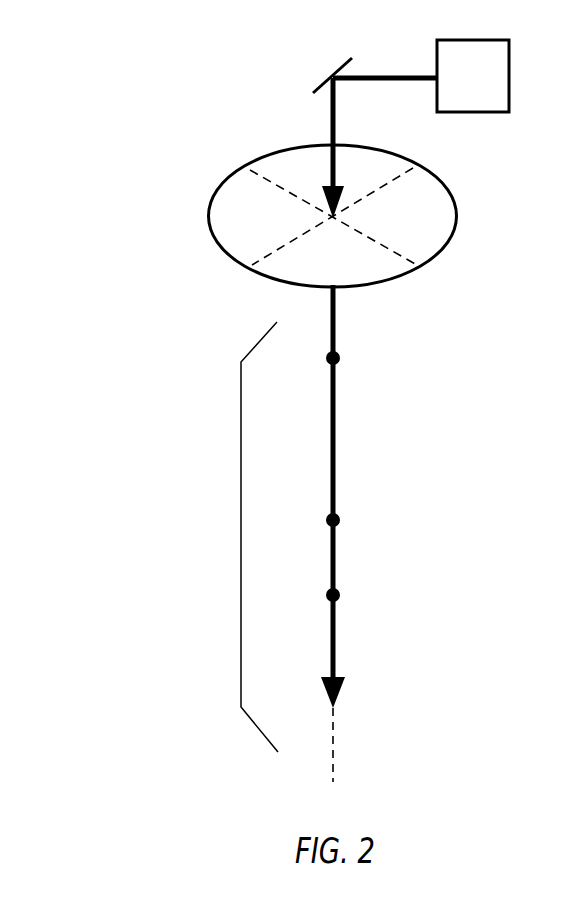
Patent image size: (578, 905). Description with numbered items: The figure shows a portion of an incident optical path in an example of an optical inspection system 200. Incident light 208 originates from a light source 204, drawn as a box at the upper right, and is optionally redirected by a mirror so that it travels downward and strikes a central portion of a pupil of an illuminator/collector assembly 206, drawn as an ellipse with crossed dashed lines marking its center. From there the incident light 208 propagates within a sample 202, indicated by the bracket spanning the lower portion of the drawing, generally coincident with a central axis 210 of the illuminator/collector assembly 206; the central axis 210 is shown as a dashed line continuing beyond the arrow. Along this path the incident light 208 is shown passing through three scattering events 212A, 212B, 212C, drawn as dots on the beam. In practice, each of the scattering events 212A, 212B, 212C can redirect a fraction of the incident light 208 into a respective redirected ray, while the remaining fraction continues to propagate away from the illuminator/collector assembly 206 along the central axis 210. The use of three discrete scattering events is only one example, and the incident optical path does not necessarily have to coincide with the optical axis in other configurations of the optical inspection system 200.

The optical inspection system 200 is at (160, 153).
The sample 202 is at (236, 537).
The light source 204 is at (491, 92).
The illuminator/collector assembly 206 is at (457, 219).
The incident light 208 is at (330, 118).
The central axis 210 is at (333, 737).
The scattering event 212A is at (341, 358).
The scattering event 212B is at (341, 520).
The scattering event 212C is at (341, 595).